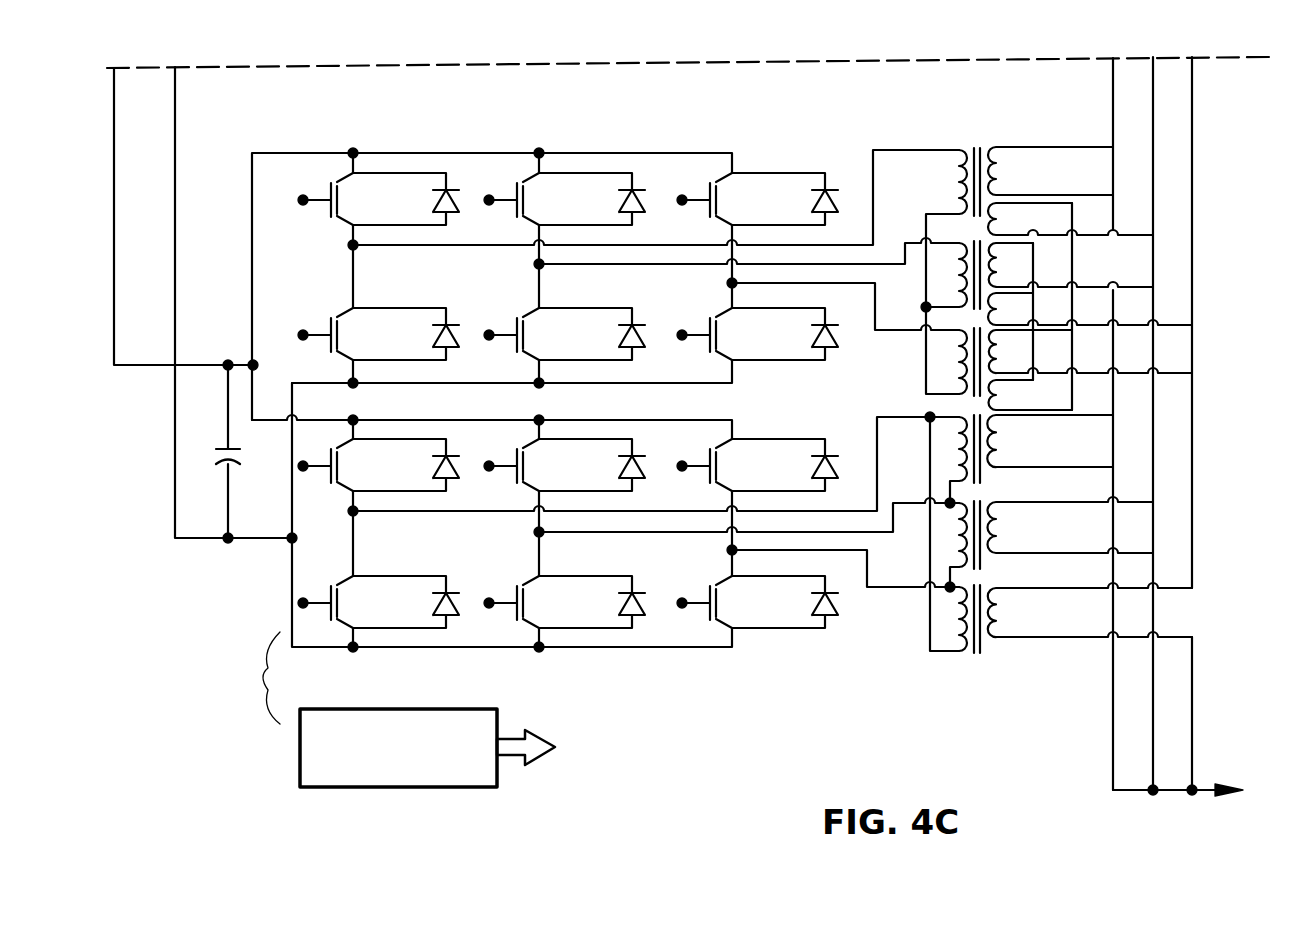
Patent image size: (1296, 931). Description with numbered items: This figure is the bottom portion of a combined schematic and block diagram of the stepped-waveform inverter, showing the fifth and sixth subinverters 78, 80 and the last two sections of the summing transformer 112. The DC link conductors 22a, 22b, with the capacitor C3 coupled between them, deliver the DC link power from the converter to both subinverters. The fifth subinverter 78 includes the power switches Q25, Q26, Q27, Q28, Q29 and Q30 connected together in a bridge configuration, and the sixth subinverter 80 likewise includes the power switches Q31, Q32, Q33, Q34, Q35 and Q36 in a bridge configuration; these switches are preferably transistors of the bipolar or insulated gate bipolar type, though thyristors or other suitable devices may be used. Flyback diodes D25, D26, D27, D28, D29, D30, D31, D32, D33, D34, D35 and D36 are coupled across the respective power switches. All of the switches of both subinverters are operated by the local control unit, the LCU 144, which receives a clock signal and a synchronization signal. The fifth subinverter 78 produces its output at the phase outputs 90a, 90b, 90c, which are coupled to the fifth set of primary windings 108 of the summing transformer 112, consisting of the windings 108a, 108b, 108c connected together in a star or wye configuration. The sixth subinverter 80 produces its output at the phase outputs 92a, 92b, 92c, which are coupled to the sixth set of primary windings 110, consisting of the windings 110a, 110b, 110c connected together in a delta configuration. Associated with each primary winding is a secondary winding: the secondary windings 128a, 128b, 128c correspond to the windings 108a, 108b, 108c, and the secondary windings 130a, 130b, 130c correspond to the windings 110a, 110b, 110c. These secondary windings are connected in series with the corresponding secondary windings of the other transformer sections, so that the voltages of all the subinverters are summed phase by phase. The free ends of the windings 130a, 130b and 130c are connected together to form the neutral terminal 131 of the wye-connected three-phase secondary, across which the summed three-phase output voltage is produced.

The DC link conductor 22a is at (197, 363).
The DC link conductor 22b is at (208, 540).
The capacitor C3 is at (231, 462).
The fifth subinverter 78 is at (612, 390).
The sixth subinverter 80 is at (410, 414).
The power switch Q25 is at (345, 175).
The power switch Q26 is at (345, 312).
The power switch Q27 is at (532, 176).
The power switch Q28 is at (533, 312).
The power switch Q29 is at (725, 176).
The power switch Q30 is at (706, 322).
The power switch Q31 is at (355, 451).
The power switch Q32 is at (355, 593).
The power switch Q33 is at (533, 440).
The power switch Q34 is at (541, 593).
The power switch Q35 is at (728, 440).
The power switch Q36 is at (720, 592).
The flyback diode D25 is at (450, 186).
The flyback diode D26 is at (448, 320).
The flyback diode D27 is at (633, 186).
The flyback diode D28 is at (642, 320).
The flyback diode D29 is at (828, 186).
The flyback diode D30 is at (828, 350).
The flyback diode D31 is at (448, 455).
The flyback diode D32 is at (440, 598).
The flyback diode D33 is at (648, 458).
The flyback diode D34 is at (645, 616).
The flyback diode D35 is at (832, 456).
The flyback diode D36 is at (830, 620).
The phase output 90a is at (350, 246).
The phase output 90b is at (537, 264).
The phase output 90c is at (730, 283).
The phase output 92a is at (357, 513).
The phase output 92b is at (537, 533).
The phase output 92c is at (730, 550).
The fifth set of primary windings 108 is at (912, 342).
The primary winding 108a is at (961, 178).
The primary winding 108b is at (958, 286).
The primary winding 108c is at (961, 371).
The sixth set of primary windings 110 is at (884, 410).
The primary winding 110a is at (961, 440).
The primary winding 110b is at (961, 546).
The primary winding 110c is at (963, 636).
The summing transformer 112 is at (996, 674).
The secondary winding 128a is at (997, 181).
The secondary winding 128b is at (997, 264).
The secondary winding 128c is at (997, 351).
The secondary winding 130a is at (997, 441).
The secondary winding 130b is at (997, 528).
The secondary winding 130c is at (997, 613).
The neutral terminal 131 is at (1205, 794).
The LCU 144 is at (300, 748).